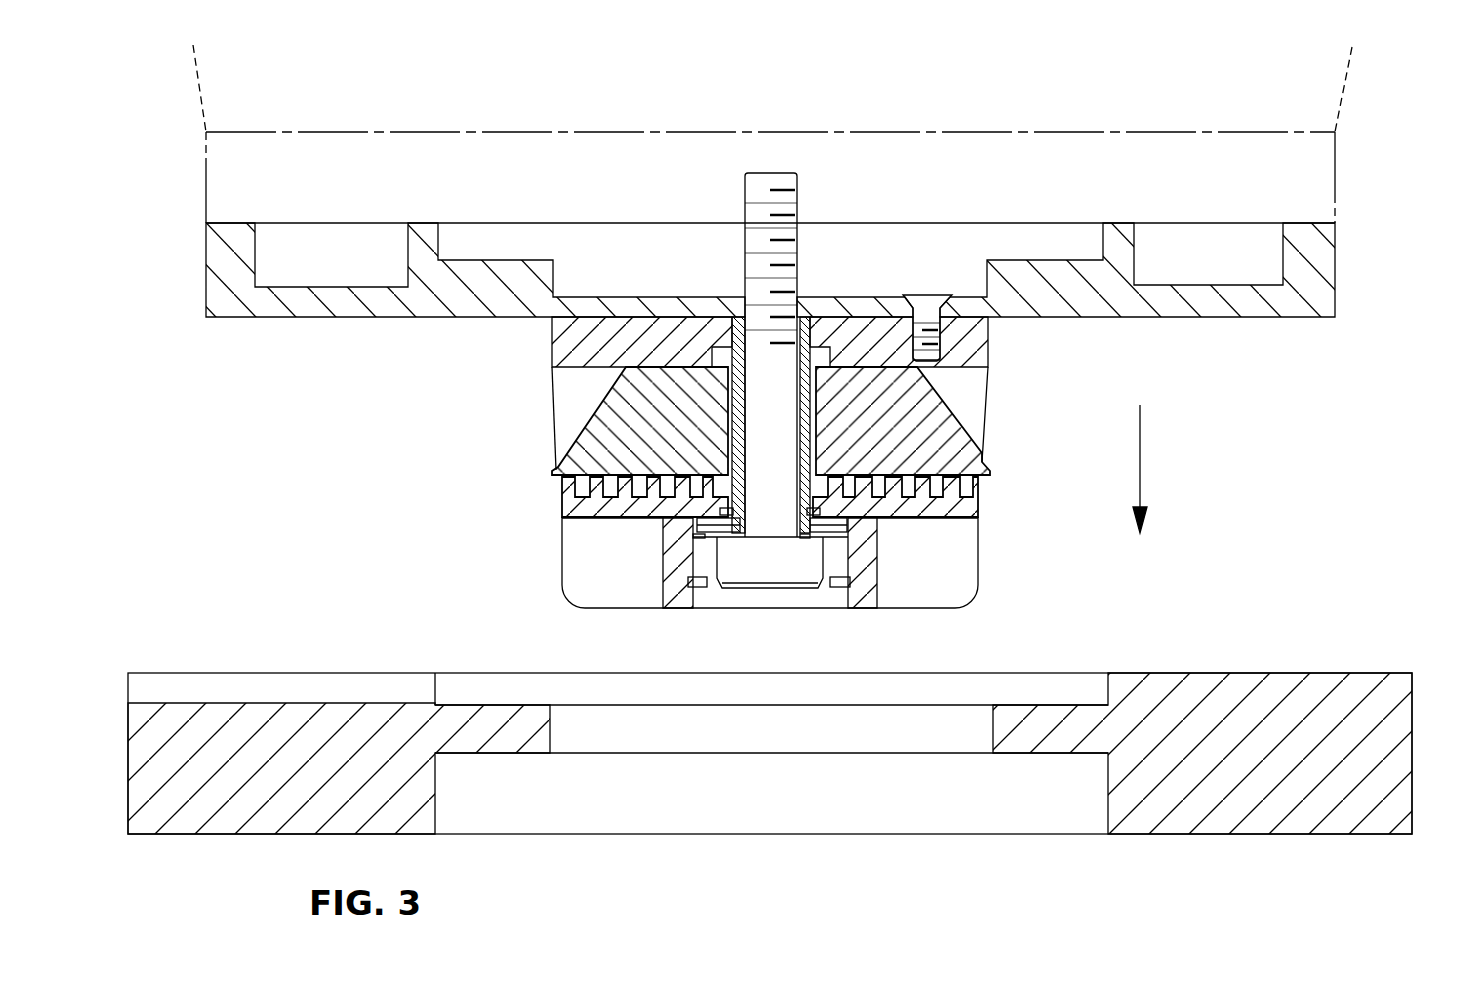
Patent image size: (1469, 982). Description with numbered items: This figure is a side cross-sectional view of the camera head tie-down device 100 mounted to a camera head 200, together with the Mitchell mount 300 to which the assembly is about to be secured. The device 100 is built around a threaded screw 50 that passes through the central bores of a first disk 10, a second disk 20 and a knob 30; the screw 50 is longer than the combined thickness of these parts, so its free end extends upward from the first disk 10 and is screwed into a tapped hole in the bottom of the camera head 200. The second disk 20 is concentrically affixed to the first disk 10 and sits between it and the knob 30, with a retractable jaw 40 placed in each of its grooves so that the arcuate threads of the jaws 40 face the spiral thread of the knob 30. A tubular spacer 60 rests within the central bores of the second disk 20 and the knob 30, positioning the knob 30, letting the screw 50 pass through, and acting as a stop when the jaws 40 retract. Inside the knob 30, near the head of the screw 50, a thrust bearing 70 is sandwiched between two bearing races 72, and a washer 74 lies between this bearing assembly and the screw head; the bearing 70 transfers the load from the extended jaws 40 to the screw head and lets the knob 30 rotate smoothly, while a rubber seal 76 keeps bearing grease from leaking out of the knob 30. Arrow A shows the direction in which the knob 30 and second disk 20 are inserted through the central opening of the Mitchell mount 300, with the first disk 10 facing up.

The first disk 10 is at (1315, 326).
The second disk 20 is at (975, 390).
The knob 30 is at (973, 567).
The retractable jaws 40 is at (588, 437).
The threaded screw 50 is at (752, 562).
The tubular spacer 60 is at (805, 522).
The thrust bearing 70 is at (697, 528).
The bearing races 72 is at (697, 518).
The washer 74 is at (695, 538).
The rubber seal 76 is at (697, 567).
The camera head tie-down device 100 is at (545, 392).
The camera head 200 is at (1330, 208).
The Mitchell mount 300 is at (1260, 663).
The arrow A is at (1140, 468).